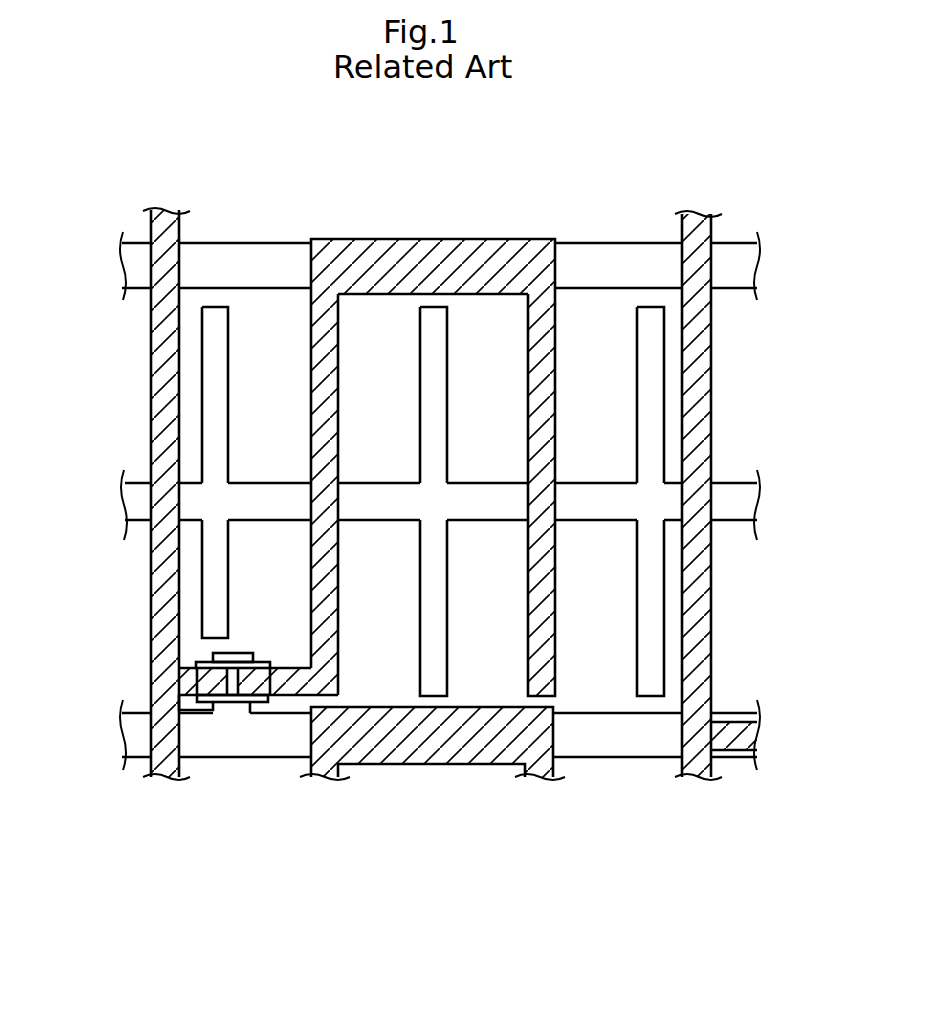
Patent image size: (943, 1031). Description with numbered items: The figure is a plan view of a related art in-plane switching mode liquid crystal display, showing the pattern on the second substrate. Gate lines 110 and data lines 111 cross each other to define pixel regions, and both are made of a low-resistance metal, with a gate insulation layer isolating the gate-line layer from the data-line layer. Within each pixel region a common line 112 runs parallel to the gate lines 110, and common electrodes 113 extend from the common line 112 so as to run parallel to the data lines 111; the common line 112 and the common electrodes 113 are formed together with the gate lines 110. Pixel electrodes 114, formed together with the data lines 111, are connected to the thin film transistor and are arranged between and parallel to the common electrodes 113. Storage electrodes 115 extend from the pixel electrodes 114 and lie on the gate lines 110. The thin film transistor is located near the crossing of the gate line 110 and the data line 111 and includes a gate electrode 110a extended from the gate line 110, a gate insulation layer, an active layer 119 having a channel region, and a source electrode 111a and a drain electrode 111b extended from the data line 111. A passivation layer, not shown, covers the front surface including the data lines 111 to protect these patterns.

The gate line 110 is at (633, 752).
The gate electrode 110a is at (228, 713).
The data line 111 is at (163, 775).
The source electrode 111a is at (205, 660).
The drain electrode 111b is at (257, 662).
The common line 112 is at (600, 495).
The common electrode 113 is at (442, 655).
The pixel electrode 114 is at (328, 578).
The storage electrode 115 is at (510, 252).
The active layer 119 is at (232, 665).